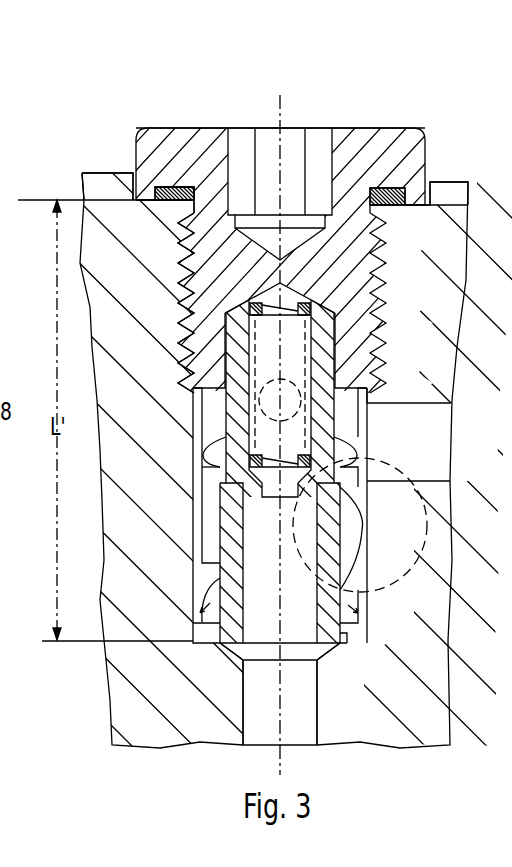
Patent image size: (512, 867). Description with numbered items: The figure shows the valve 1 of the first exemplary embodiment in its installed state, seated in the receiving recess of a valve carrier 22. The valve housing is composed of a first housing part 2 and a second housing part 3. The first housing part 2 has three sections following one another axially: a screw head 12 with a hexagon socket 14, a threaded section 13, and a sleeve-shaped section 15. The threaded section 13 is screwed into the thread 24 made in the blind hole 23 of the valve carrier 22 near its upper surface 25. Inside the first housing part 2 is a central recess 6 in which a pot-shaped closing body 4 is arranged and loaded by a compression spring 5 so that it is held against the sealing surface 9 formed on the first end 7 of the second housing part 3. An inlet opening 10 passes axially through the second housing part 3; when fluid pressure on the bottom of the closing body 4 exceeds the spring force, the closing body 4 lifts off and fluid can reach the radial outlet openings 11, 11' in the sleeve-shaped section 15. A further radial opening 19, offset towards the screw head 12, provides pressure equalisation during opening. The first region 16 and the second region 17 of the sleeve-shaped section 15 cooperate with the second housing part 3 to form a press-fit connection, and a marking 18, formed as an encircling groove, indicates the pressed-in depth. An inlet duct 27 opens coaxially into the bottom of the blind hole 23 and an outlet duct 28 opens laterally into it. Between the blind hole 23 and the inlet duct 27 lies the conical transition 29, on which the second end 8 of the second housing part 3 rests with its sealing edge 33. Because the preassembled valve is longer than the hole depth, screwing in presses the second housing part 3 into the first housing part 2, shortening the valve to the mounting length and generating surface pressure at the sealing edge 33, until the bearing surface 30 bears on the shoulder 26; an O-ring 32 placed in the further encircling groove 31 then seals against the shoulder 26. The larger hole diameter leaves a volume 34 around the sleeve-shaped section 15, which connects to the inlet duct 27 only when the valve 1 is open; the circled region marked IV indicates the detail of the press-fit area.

The valve 1 is at (362, 46).
The first housing part 2 is at (178, 280).
The second housing part 3 is at (190, 644).
The closing body 4 is at (372, 352).
The compression spring 5 is at (358, 304).
The central recess 6 is at (362, 330).
The first end 7 is at (362, 530).
The second end 8 is at (348, 648).
The sealing surface 9 is at (355, 498).
The inlet opening 10 is at (297, 632).
The outlet opening 11 is at (185, 446).
The outlet opening 11' is at (370, 505).
The screw head 12 is at (408, 127).
The threaded section 13 is at (231, 303).
The thread 24 is at (192, 320).
The hexagon socket 14 is at (294, 142).
The sleeve-shaped section 15 is at (205, 515).
The first region 16 is at (210, 486).
The second region 17 is at (200, 562).
The marking 18 is at (200, 590).
The further radial opening 19 is at (195, 400).
The valve carrier 22 is at (453, 185).
The blind hole 23 is at (202, 462).
The upper surface 25 is at (124, 176).
The shoulder 26 is at (160, 188).
The inlet duct 27 is at (325, 735).
The outlet duct 28 is at (440, 462).
The transition 29 is at (350, 633).
The bearing surface 30 is at (430, 214).
The further encircling groove 31 is at (180, 226).
The O-ring 32 is at (183, 186).
The sealing edge 33 is at (213, 655).
The volume 34 is at (370, 400).
The detail circle IV is at (440, 546).